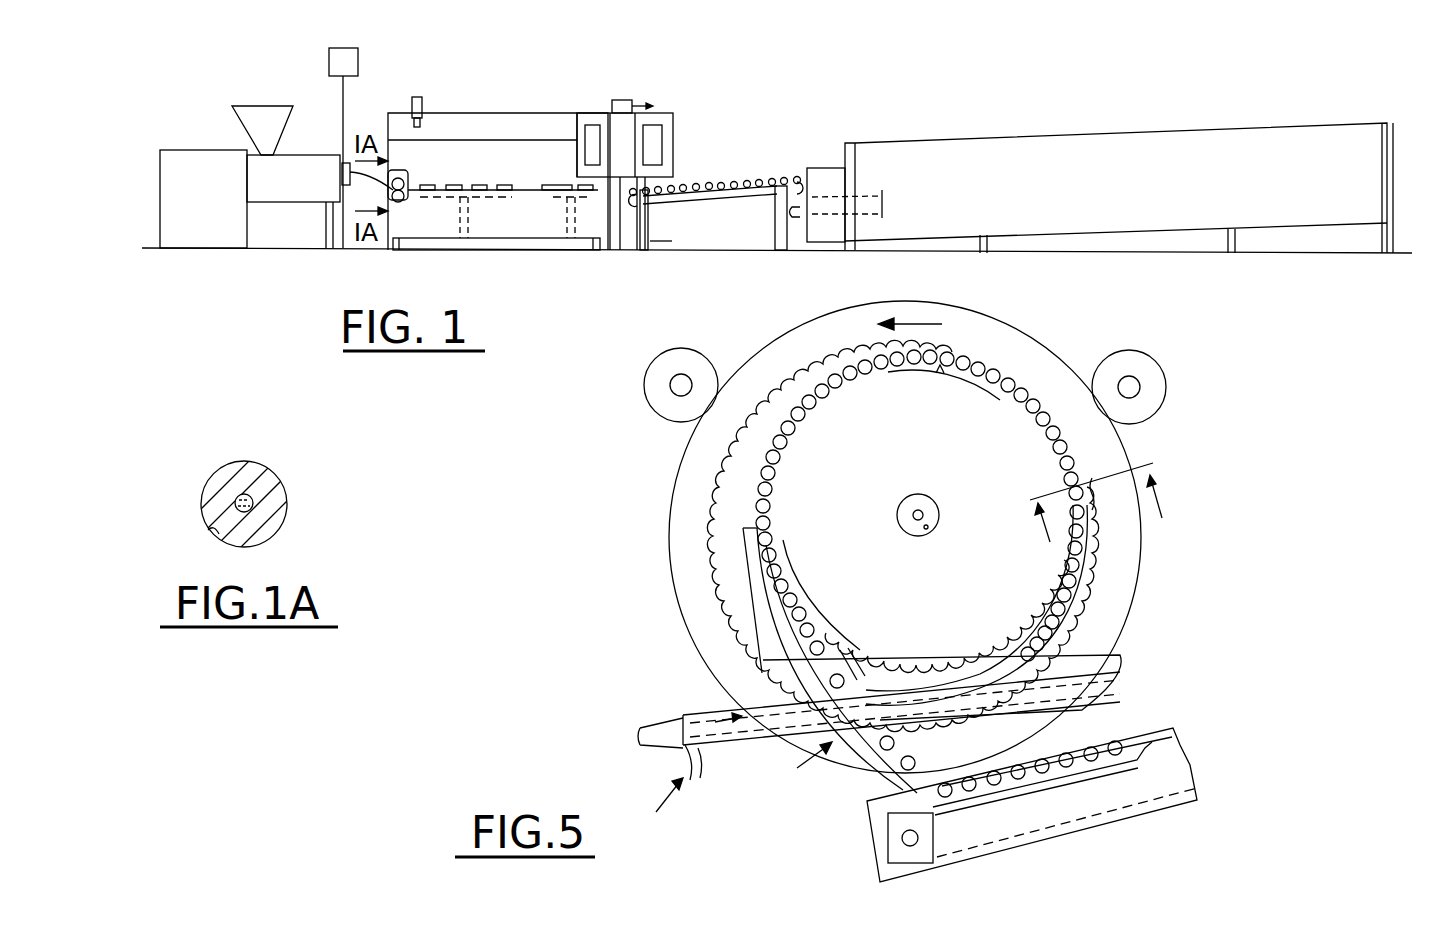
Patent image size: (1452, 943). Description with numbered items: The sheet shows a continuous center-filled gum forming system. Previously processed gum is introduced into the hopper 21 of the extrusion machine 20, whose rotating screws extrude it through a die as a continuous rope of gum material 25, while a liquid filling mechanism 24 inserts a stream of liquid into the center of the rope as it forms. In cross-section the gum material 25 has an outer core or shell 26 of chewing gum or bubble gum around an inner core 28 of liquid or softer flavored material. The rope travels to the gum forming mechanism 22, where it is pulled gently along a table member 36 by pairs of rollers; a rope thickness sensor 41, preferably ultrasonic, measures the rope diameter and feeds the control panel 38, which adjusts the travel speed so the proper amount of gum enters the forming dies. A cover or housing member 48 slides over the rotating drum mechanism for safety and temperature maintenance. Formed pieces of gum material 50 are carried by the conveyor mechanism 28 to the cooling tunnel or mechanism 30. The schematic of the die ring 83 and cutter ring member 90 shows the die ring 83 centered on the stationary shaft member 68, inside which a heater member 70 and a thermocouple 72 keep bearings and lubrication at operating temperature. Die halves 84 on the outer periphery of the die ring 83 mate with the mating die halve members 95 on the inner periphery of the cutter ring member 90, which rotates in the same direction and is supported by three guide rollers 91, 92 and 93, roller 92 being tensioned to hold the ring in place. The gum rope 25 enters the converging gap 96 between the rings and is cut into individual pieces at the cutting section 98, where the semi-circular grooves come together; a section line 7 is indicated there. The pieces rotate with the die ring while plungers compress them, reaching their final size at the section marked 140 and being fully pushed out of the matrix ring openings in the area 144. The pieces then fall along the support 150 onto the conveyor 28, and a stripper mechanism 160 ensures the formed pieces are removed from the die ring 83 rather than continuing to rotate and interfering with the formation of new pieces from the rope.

In FIG. 1, the extrusion machine 20 is at (198, 256).
In FIG. 1, the hopper 21 is at (259, 112).
In FIG. 1, the gum forming mechanism 22 is at (530, 255).
In FIG. 1, the liquid filling mechanism 24 is at (343, 48).
In FIG. 1, the gum material 25 is at (367, 178).
In FIG. 1A, the gum material 25 is at (208, 531).
In FIG. 5, the gum material 25 is at (1090, 548).
In FIG. 1A, the outer core or shell 26 is at (260, 482).
In FIG. 1, the inner core 28 is at (728, 205).
In FIG. 1A, the inner core 28 is at (236, 497).
In FIG. 5, the inner core 28 is at (1060, 812).
In FIG. 1, the cooling tunnel or mechanism 30 is at (1022, 152).
In FIG. 1, the table member 36 is at (510, 224).
In FIG. 1, the control panel 38 is at (532, 110).
In FIG. 1, the rope thickness sensor 41 is at (421, 106).
In FIG. 1, the cover or housing member 48 is at (672, 116).
In FIG. 1, the pieces of gum material 50 is at (710, 184).
In FIG. 5, the pieces of gum material 50 is at (940, 360).
In FIG. 5, the stationary shaft member 68 is at (912, 496).
In FIG. 5, the heater member 70 is at (913, 514).
In FIG. 5, the thermocouple 72 is at (929, 527).
In FIG. 5, the die ring 83 is at (960, 592).
In FIG. 5, the die halves 84 is at (791, 476).
In FIG. 5, the cutter ring member 90 is at (1141, 598).
In FIG. 5, the guide roller 91 is at (688, 357).
In FIG. 5, the guide roller 92 is at (1141, 361).
In FIG. 5, the guide roller 93 is at (880, 790).
In FIG. 5, the mating die halve members 95 is at (742, 432).
In FIG. 5, the converging gap 96 is at (1086, 588).
In FIG. 5, the cutting section 98 is at (1091, 486).
In FIG. 5, the section line 7- 7 is at (1102, 521).
In FIG. 5, the final forming section 140 is at (944, 390).
In FIG. 5, the ejection area 144 is at (801, 600).
In FIG. 5, the support 150 is at (750, 664).
In FIG. 5, the stripper mechanism 160 is at (855, 668).